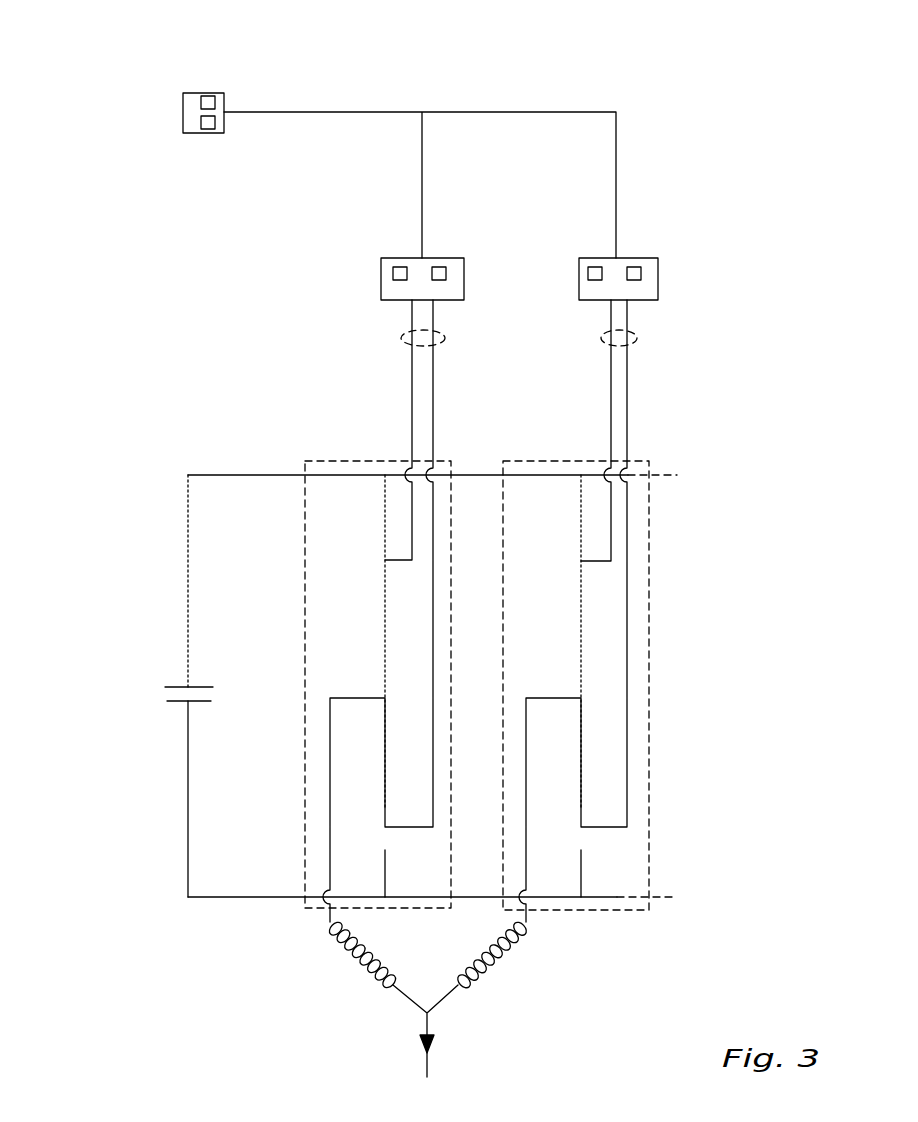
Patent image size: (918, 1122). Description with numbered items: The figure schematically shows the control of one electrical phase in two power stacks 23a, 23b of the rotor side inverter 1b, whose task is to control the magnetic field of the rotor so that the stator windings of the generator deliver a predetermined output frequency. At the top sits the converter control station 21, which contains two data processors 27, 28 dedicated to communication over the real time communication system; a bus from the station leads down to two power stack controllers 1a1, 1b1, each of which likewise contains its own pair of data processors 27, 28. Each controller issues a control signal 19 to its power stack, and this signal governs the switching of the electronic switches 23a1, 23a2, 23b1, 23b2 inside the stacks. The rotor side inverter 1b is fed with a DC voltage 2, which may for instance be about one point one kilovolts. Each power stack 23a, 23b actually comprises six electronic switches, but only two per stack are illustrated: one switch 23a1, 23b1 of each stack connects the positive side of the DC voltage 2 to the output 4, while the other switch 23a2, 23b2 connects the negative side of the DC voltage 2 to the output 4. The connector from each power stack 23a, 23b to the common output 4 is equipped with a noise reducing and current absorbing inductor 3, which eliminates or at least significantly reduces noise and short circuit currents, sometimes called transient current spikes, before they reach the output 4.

The converter control station 21 is at (193, 100).
The data processor 27 is at (210, 95).
The data processor 28 is at (205, 131).
The power stack controller 1a1 is at (462, 262).
The power stack controller 1b1 is at (660, 262).
The control signal 19 is at (445, 338).
The rotor side inverter 1b is at (195, 408).
The power stack 23a is at (306, 460).
The electronic switch 23a1 is at (408, 577).
The electronic switch 23a2 is at (408, 845).
The power stack 23b is at (649, 461).
The electronic switch 23b1 is at (581, 547).
The electronic switch 23b2 is at (581, 810).
The DC voltage 2 is at (188, 687).
The inductor 3 is at (358, 963).
The output 4 is at (427, 1025).